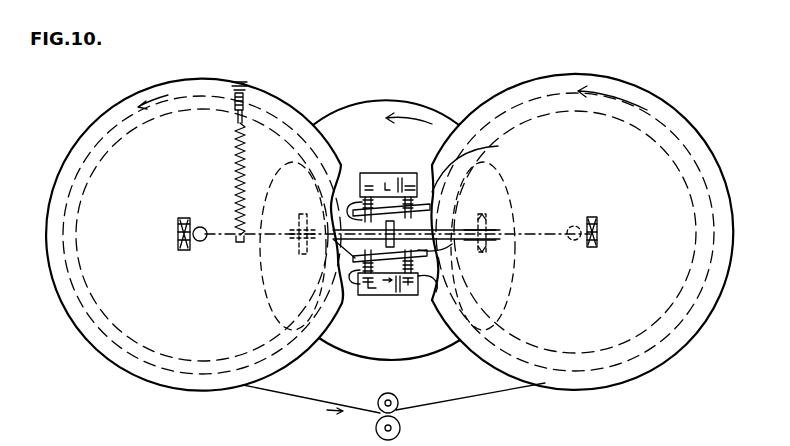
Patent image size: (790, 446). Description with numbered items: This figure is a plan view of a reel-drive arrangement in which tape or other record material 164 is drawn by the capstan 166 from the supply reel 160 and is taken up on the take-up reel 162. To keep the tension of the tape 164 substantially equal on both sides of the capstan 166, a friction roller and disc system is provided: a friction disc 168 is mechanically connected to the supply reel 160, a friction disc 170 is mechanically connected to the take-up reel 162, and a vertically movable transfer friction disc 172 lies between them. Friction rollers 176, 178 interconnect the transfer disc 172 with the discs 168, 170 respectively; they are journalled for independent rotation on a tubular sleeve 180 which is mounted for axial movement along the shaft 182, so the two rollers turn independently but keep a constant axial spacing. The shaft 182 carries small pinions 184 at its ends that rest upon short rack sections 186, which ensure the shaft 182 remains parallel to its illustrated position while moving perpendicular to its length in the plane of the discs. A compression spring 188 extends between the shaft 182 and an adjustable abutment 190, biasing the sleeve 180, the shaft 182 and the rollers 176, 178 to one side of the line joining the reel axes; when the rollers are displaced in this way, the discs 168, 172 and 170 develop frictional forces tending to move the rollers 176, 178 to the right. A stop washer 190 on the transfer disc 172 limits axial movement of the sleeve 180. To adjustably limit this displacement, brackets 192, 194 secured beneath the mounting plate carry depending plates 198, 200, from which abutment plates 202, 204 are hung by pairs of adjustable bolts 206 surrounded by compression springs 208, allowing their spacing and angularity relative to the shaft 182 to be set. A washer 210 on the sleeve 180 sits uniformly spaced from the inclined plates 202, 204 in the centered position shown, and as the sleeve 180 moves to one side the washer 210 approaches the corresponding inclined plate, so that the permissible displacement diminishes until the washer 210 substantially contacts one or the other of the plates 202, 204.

The supply reel 160 is at (182, 79).
The take-up reel 162 is at (658, 97).
The tape 164 is at (609, 398).
The capstan 166 is at (397, 398).
The friction disc 168 is at (77, 157).
The friction disc 170 is at (711, 145).
The transfer friction disc 172 is at (423, 106).
The friction roller 176 is at (303, 200).
The friction roller 178 is at (456, 193).
The tubular sleeve 180 is at (330, 250).
The shaft 182 is at (537, 228).
The pinions 184 is at (178, 250).
The rack sections 186 is at (195, 250).
The compression spring 188 is at (233, 157).
The adjustable abutment 190 is at (253, 101).
The bracket 192 is at (386, 296).
The bracket 194 is at (400, 180).
The depending plate 198 is at (402, 297).
The depending plate 200 is at (382, 190).
The abutment plate 202 is at (488, 149).
The abutment plate 204 is at (441, 283).
The adjustable bolts 206 is at (365, 201).
The compression springs 208 is at (318, 340).
The washer 210 is at (457, 255).